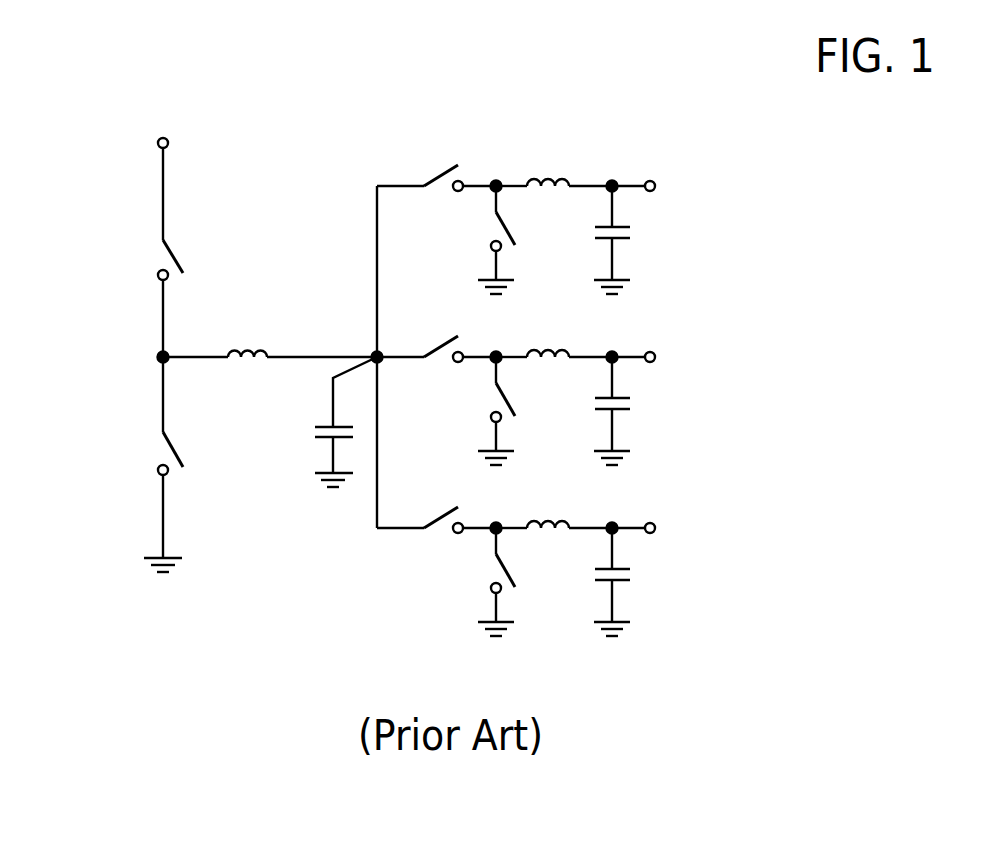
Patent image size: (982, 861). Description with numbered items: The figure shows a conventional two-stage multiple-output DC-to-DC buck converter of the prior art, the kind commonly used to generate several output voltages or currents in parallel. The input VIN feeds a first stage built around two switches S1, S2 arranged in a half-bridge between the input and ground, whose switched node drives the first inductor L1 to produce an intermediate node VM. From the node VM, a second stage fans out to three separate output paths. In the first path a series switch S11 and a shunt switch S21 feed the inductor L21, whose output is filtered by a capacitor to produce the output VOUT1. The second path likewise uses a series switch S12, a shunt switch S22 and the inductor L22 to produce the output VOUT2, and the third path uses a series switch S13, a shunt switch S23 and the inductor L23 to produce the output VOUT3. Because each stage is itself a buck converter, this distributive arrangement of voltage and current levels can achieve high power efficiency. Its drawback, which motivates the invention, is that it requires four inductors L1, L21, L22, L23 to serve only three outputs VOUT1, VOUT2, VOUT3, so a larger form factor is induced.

The input voltage terminal VIN is at (163, 173).
The high-side switch S1 is at (191, 296).
The low-side switch S2 is at (184, 464).
The inductor L1 is at (270, 332).
The intermediate voltage node VM is at (335, 403).
The first output selection switch S11 is at (436, 159).
The first output shunt switch S21 is at (478, 240).
The inductor L21 is at (554, 162).
The output VOUT1 is at (681, 187).
The second output selection switch S12 is at (436, 330).
The second output shunt switch S22 is at (482, 411).
The inductor L22 is at (554, 332).
The output VOUT2 is at (681, 358).
The third output selection switch S13 is at (436, 504).
The third output shunt switch S23 is at (480, 582).
The inductor L23 is at (554, 503).
The output VOUT3 is at (681, 529).